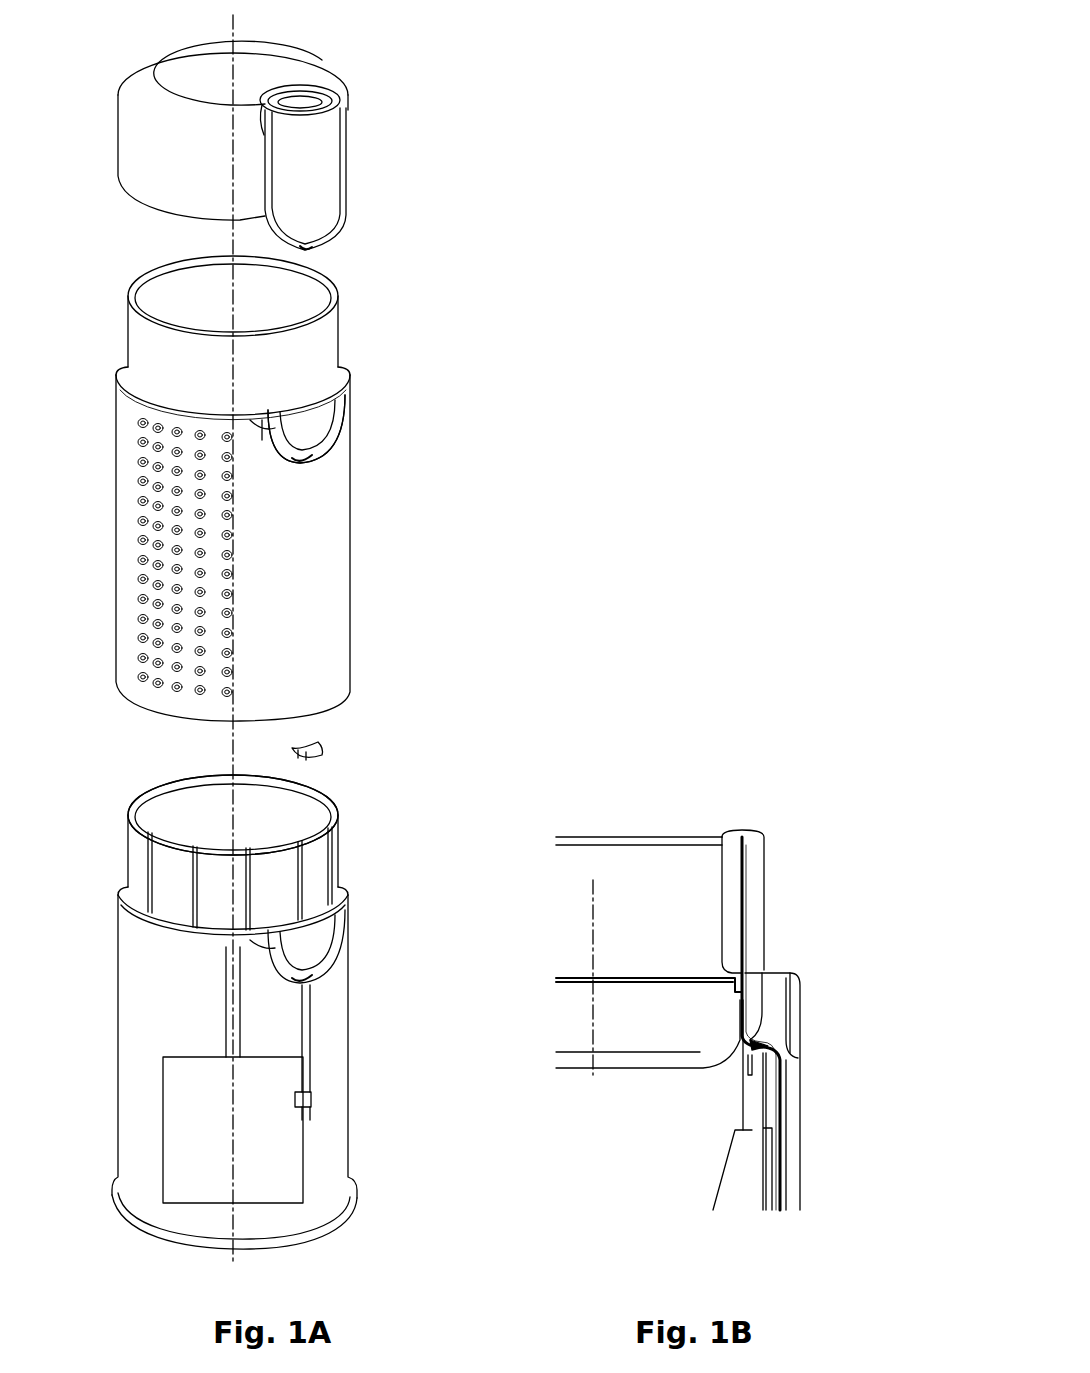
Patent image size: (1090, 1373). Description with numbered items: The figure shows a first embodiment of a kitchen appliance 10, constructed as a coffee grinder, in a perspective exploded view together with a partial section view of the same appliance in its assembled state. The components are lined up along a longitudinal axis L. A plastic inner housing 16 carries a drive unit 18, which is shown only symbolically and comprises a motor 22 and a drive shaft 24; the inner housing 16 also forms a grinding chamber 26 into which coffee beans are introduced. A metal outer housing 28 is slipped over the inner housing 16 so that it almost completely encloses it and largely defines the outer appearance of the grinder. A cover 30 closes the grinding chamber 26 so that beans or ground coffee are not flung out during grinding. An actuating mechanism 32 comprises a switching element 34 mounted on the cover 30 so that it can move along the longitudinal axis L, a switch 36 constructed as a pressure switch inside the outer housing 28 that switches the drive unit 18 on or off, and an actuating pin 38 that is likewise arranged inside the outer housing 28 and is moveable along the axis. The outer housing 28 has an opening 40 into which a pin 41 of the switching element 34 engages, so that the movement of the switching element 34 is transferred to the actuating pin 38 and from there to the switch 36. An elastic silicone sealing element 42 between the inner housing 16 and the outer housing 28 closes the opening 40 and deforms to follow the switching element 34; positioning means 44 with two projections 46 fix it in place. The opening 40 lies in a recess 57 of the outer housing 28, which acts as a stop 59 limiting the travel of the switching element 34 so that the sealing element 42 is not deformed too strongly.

In FIG. 1A, the longitudinal axis L is at (230, 27).
In FIG. 1B, the longitudinal axis L is at (590, 913).
In FIG. 1A, the kitchen appliance 10 is at (486, 166).
In FIG. 1B, the kitchen appliance 10 is at (650, 731).
In FIG. 1A, the inner housing 16 is at (135, 1100).
In FIG. 1B, the inner housing 16 is at (730, 838).
In FIG. 1A, the drive unit 18 is at (233, 1130).
In FIG. 1A, the motor 22 is at (233, 1130).
In FIG. 1A, the drive shaft 24 is at (228, 1003).
In FIG. 1A, the grinding chamber 26 is at (190, 822).
In FIG. 1B, the grinding chamber 26 is at (636, 868).
In FIG. 1A, the outer housing 28 is at (128, 584).
In FIG. 1B, the outer housing 28 is at (755, 885).
In FIG. 1A, the cover 30 is at (128, 140).
In FIG. 1A, the actuating mechanism 32 is at (357, 167).
In FIG. 1A, the switching element 34 is at (330, 201).
In FIG. 1A, the switch 36 is at (312, 1100).
In FIG. 1A, the actuating pin 38 is at (310, 1040).
In FIG. 1B, the actuating pin 38 is at (730, 1198).
In FIG. 1A, the opening 40 is at (308, 450).
In FIG. 1A, the pin 41 is at (312, 248).
In FIG. 1A, the sealing element 42 is at (322, 755).
In FIG. 1B, the sealing element 42 is at (765, 1038).
In FIG. 1A, the positioning means 44 is at (349, 949).
In FIG. 1A, the projections 46 is at (320, 968).
In FIG. 1A, the recess 57 is at (387, 412).
In FIG. 1A, the stop 59 is at (365, 413).